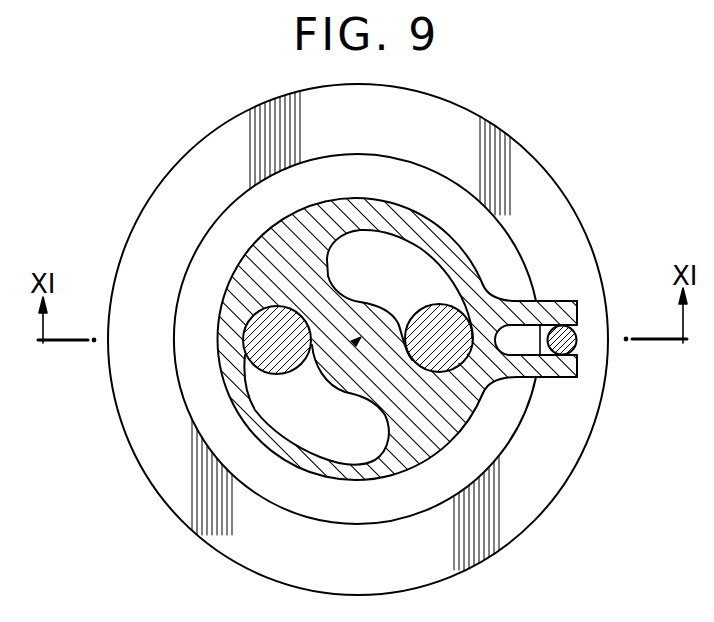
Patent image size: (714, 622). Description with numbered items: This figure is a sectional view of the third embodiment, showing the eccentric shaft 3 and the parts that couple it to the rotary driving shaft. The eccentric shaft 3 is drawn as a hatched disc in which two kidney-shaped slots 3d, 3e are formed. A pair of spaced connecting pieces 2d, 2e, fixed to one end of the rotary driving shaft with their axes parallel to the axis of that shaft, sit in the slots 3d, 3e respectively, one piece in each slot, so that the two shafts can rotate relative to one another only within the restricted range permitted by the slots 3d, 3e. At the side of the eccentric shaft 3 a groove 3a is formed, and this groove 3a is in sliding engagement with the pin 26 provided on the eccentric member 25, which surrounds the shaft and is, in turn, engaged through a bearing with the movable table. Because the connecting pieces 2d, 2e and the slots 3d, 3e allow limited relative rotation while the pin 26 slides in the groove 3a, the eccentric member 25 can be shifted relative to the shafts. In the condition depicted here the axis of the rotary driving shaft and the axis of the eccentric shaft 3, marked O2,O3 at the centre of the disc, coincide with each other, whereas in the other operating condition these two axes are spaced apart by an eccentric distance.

The eccentric member 25 is at (533, 180).
The eccentric shaft 3 is at (442, 435).
The groove 3a is at (553, 302).
The slot 3d is at (381, 282).
The slot 3e is at (316, 405).
The connecting piece 2d is at (421, 314).
The connecting piece 2e is at (285, 372).
The pin 26 is at (577, 337).
The axes of the rotary driving shaft and the eccentric shaft O2,O3 is at (356, 342).